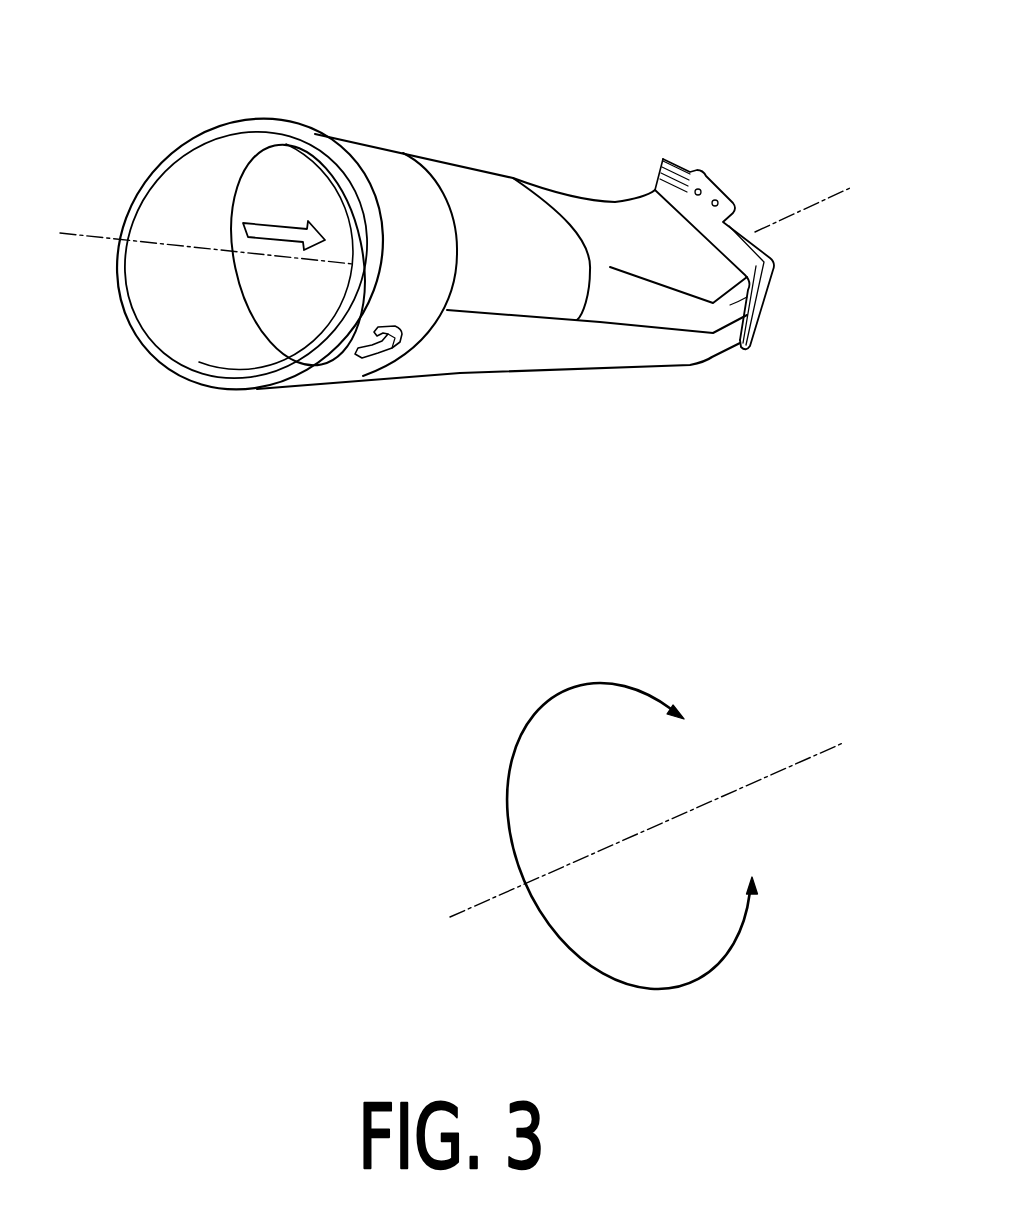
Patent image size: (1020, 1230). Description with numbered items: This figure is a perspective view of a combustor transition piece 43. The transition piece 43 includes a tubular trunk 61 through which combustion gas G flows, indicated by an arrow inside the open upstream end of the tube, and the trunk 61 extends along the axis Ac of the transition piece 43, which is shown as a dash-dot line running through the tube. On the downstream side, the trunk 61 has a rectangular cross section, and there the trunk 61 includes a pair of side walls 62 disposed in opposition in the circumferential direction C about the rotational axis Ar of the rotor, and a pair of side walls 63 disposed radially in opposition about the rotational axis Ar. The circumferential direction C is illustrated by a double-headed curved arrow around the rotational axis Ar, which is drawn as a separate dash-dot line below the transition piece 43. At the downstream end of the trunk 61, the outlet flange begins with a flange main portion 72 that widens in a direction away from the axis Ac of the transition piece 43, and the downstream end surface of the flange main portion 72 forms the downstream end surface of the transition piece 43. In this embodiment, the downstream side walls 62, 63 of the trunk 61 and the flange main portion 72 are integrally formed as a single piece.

The transition piece 43 is at (188, 405).
The trunk 61 is at (497, 358).
The side walls 62 is at (655, 190).
The side walls 63 is at (687, 236).
The flange main portion 72 is at (742, 222).
The combustion gas G is at (280, 223).
The axis Ac is at (96, 232).
The rotational axis Ar is at (475, 903).
The circumferential direction C is at (545, 706).